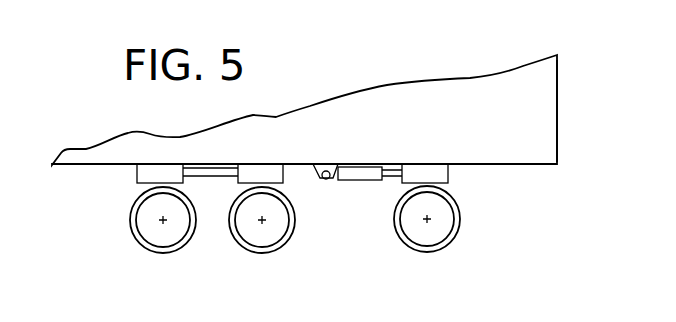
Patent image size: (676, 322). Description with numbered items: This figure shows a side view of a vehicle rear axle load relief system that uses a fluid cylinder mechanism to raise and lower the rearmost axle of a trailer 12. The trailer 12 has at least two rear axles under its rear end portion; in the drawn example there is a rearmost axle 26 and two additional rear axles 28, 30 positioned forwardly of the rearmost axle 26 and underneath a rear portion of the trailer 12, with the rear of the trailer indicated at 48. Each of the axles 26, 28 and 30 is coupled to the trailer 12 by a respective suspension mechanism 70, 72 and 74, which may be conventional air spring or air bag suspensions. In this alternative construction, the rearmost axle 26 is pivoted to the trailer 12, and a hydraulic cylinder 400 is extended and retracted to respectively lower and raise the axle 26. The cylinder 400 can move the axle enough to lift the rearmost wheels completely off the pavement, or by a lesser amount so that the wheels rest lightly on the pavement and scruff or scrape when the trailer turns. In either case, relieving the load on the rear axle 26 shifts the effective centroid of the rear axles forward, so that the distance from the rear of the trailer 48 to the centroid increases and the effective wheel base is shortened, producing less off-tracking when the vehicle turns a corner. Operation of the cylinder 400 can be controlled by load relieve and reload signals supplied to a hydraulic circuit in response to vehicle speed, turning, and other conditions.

The trailer 12 is at (502, 89).
The rear of the trailer 48 is at (557, 93).
The hydraulic cylinder 400 is at (362, 175).
The suspension mechanism 70 is at (135, 182).
The suspension mechanism 72 is at (288, 183).
The suspension mechanism 74 is at (452, 176).
The rear axle 30 is at (163, 220).
The rear axle 28 is at (262, 220).
The rearmost axle 26 is at (427, 219).